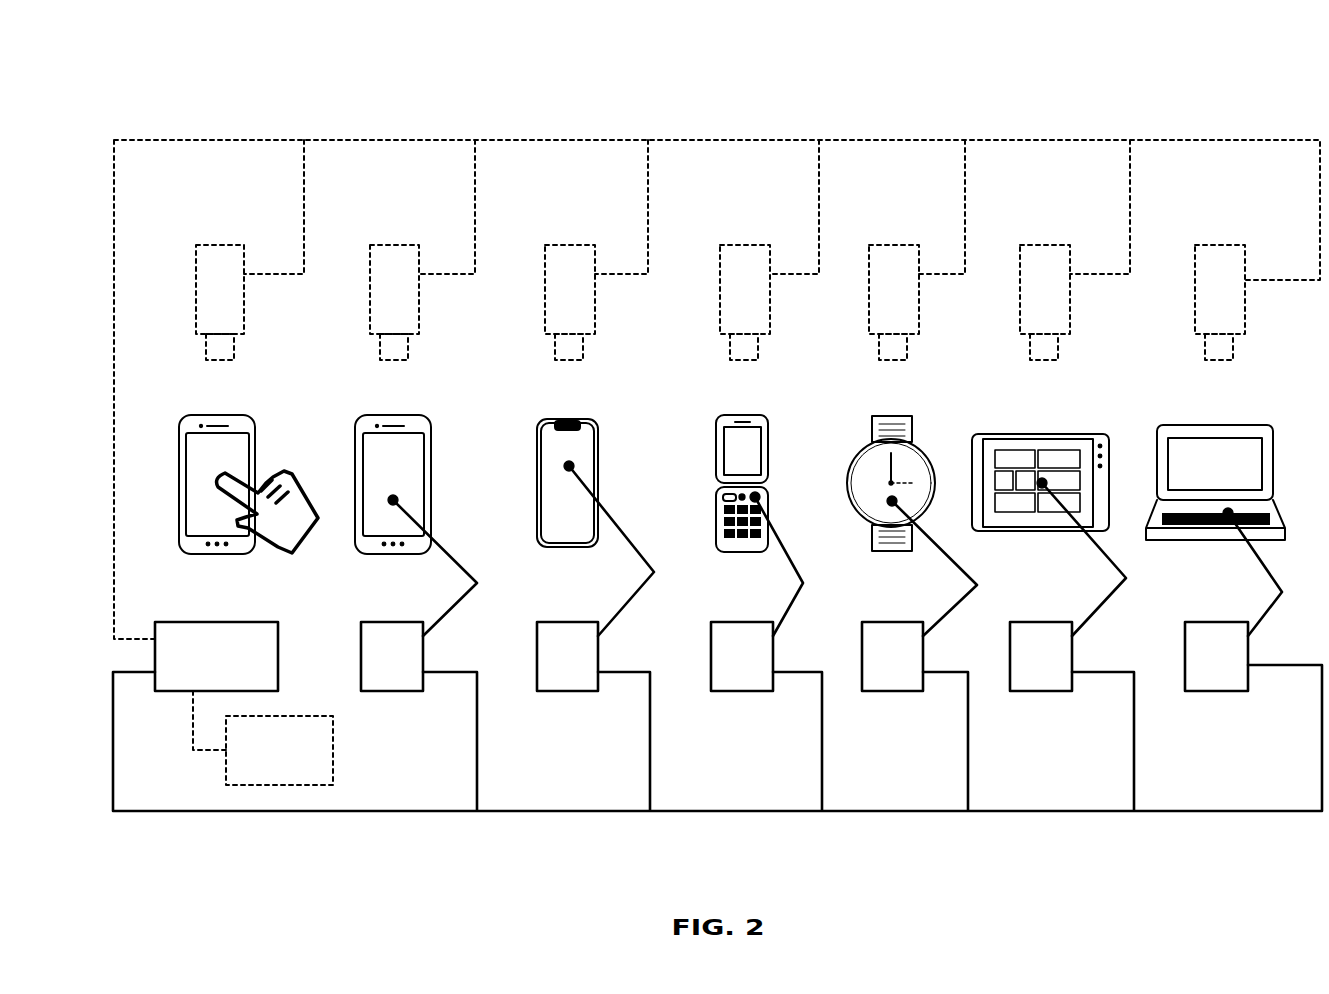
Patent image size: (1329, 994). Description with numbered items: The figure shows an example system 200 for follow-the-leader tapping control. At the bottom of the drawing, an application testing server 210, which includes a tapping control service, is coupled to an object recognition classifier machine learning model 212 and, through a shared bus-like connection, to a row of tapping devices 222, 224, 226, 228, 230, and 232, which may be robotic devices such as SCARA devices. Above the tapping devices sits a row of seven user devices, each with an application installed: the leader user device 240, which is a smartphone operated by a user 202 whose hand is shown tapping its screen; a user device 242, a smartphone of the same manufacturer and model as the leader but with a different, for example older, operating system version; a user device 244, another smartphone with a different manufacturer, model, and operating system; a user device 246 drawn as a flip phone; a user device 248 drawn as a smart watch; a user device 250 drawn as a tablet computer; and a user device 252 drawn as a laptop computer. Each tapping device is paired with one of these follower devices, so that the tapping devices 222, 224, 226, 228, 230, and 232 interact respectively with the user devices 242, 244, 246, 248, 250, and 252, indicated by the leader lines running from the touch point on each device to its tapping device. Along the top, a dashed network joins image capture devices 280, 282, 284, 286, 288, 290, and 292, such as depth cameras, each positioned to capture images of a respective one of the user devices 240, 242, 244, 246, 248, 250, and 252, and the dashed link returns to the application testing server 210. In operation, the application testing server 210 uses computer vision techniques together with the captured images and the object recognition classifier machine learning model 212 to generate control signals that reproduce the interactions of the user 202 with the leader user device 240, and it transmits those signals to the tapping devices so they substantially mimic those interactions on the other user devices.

The system 200 is at (1253, 36).
The user 202 is at (282, 470).
The application testing server 210 is at (201, 668).
The object recognition classifier machine learning model 212 is at (263, 763).
The tapping device 222 is at (376, 668).
The tapping device 224 is at (551, 668).
The tapping device 226 is at (726, 668).
The tapping device 228 is at (876, 668).
The tapping device 230 is at (1025, 668).
The tapping device 232 is at (1200, 668).
The user device 240 is at (217, 499).
The user device 242 is at (416, 525).
The user device 244 is at (595, 527).
The user device 246 is at (759, 525).
The user device 248 is at (912, 526).
The user device 250 is at (1049, 535).
The user device 252 is at (1215, 530).
The image capture device 280 is at (220, 287).
The image capture device 282 is at (394, 287).
The image capture device 284 is at (570, 287).
The image capture device 286 is at (745, 287).
The image capture device 288 is at (894, 287).
The image capture device 290 is at (1045, 287).
The image capture device 292 is at (1220, 287).